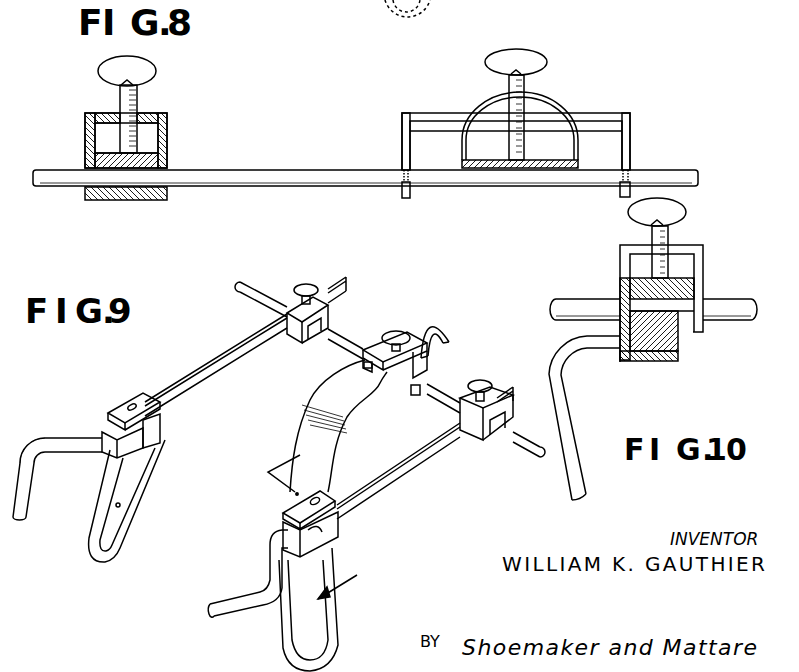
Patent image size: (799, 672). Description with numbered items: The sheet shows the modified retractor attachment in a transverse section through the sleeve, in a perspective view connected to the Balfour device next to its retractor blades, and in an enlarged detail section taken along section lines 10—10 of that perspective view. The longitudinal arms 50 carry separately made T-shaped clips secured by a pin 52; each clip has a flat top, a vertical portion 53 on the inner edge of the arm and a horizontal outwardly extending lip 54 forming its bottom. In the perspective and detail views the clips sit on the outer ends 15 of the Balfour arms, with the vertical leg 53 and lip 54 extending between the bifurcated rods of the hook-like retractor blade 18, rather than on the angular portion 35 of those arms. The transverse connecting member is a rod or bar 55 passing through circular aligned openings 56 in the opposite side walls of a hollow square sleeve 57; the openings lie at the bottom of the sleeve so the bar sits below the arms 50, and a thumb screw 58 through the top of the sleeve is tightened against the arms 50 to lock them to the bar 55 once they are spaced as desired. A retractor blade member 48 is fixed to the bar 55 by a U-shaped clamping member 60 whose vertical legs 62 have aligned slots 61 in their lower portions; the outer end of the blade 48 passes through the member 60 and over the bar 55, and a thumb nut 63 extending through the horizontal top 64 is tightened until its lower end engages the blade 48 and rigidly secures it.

In FIG. 9, the retractor frame assembly 10 is at (327, 527).
In FIG. 10, the outer end of arm 15 is at (667, 336).
In FIG. 9, the outer end of arm 15 is at (110, 430).
In FIG. 10, the retractor blade 18 is at (567, 412).
In FIG. 9, the retractor blade 18 is at (30, 500).
In FIG. 9, the angular portion of arm 35 is at (37, 463).
In FIG. 8, the retractor blade member 48 is at (545, 168).
In FIG. 9, the retractor blade member 48 is at (350, 423).
In FIG. 8, the longitudinal arm 50 is at (146, 152).
In FIG. 10, the longitudinal arm 50 is at (688, 288).
In FIG. 9, the longitudinal arm 50 is at (220, 362).
In FIG. 9, the pin 52 is at (133, 402).
In FIG. 10, the vertical portion of clip 53 is at (624, 305).
In FIG. 9, the vertical portion of clip 53 is at (147, 433).
In FIG. 10, the lip 54 is at (650, 364).
In FIG. 8, the transverse bar 55 is at (233, 172).
In FIG. 10, the transverse bar 55 is at (722, 305).
In FIG. 9, the transverse bar 55 is at (337, 335).
In FIG. 8, the aligned openings 56 is at (83, 167).
In FIG. 8, the hollow square sleeve 57 is at (150, 118).
In FIG. 10, the hollow square sleeve 57 is at (690, 243).
In FIG. 9, the hollow square sleeve 57 is at (289, 310).
In FIG. 8, the thumb screw 58 is at (156, 72).
In FIG. 10, the thumb screw 58 is at (686, 210).
In FIG. 9, the thumb screw 58 is at (305, 283).
In FIG. 8, the U-shaped member 60 is at (633, 110).
In FIG. 9, the U-shaped member 60 is at (420, 352).
In FIG. 8, the aligned slots 61 is at (402, 165).
In FIG. 8, the vertical legs 62 is at (403, 140).
In FIG. 8, the thumb nut 63 is at (537, 62).
In FIG. 9, the thumb nut 63 is at (393, 330).
In FIG. 8, the horizontal leg 64 is at (583, 112).